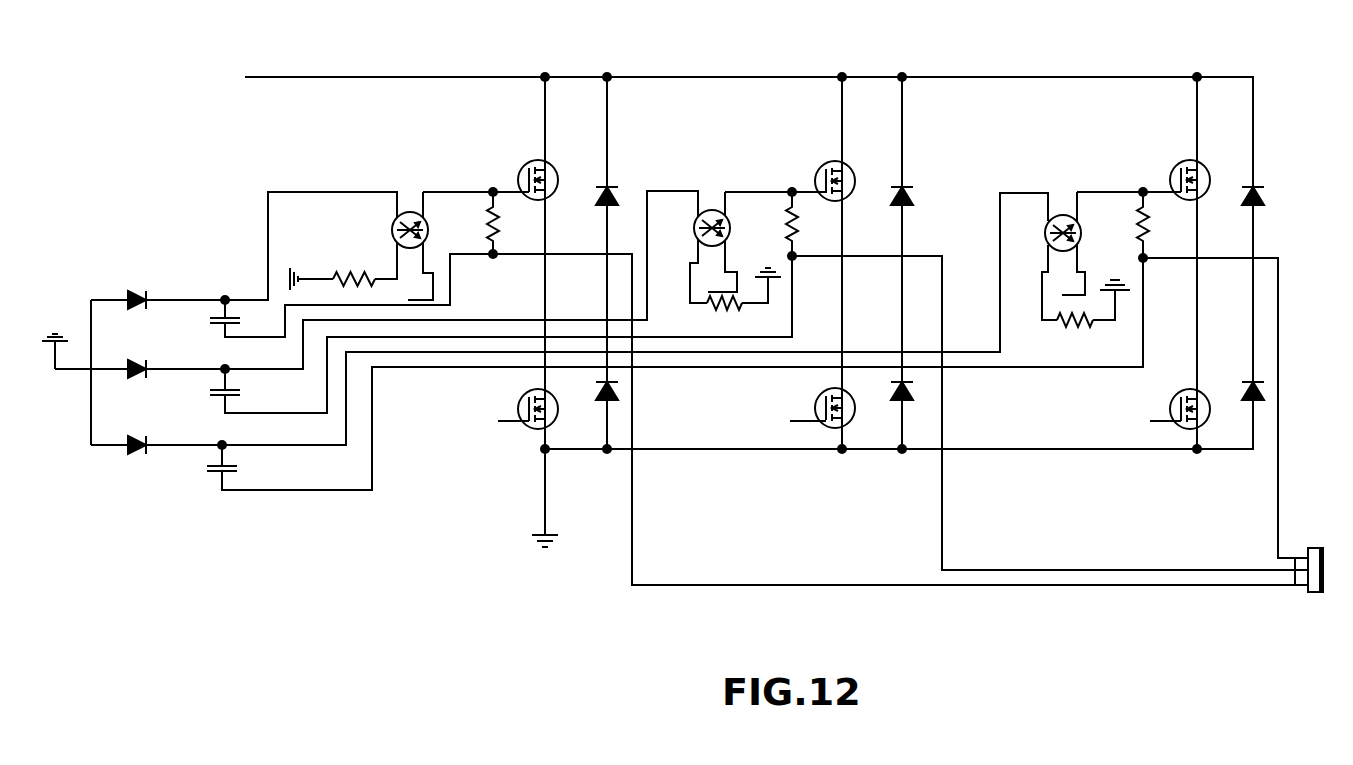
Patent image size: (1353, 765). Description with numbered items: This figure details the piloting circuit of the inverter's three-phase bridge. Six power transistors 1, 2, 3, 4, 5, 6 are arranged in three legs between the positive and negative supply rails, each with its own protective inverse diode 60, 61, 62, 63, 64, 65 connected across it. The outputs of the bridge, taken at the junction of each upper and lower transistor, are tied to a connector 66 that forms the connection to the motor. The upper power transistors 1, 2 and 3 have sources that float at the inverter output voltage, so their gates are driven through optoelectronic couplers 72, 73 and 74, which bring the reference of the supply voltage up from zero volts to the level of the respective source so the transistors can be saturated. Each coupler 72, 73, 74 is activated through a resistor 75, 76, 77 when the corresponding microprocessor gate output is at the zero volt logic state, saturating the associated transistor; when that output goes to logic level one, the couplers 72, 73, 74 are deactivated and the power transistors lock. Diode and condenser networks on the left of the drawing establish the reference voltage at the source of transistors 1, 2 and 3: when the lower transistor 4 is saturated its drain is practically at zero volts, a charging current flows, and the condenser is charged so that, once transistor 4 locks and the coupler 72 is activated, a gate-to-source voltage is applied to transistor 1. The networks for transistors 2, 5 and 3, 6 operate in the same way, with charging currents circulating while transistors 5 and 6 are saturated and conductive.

The power transistor 1 is at (523, 183).
The power transistor 2 is at (823, 165).
The power transistor 3 is at (1175, 162).
The power transistor 4 is at (540, 428).
The power transistor 5 is at (815, 418).
The power transistor 6 is at (1182, 427).
The inverse diode 60 is at (613, 188).
The inverse diode 61 is at (907, 188).
The inverse diode 62 is at (1253, 188).
The inverse diode 63 is at (617, 395).
The inverse diode 64 is at (913, 393).
The inverse diode 65 is at (1247, 388).
The connector 66 is at (1320, 548).
The optoelectronic coupler 72 is at (408, 213).
The optoelectronic coupler 73 is at (702, 212).
The optoelectronic coupler 74 is at (1060, 216).
The resistor 75 is at (347, 273).
The resistor 76 is at (730, 305).
The resistor 77 is at (1077, 322).